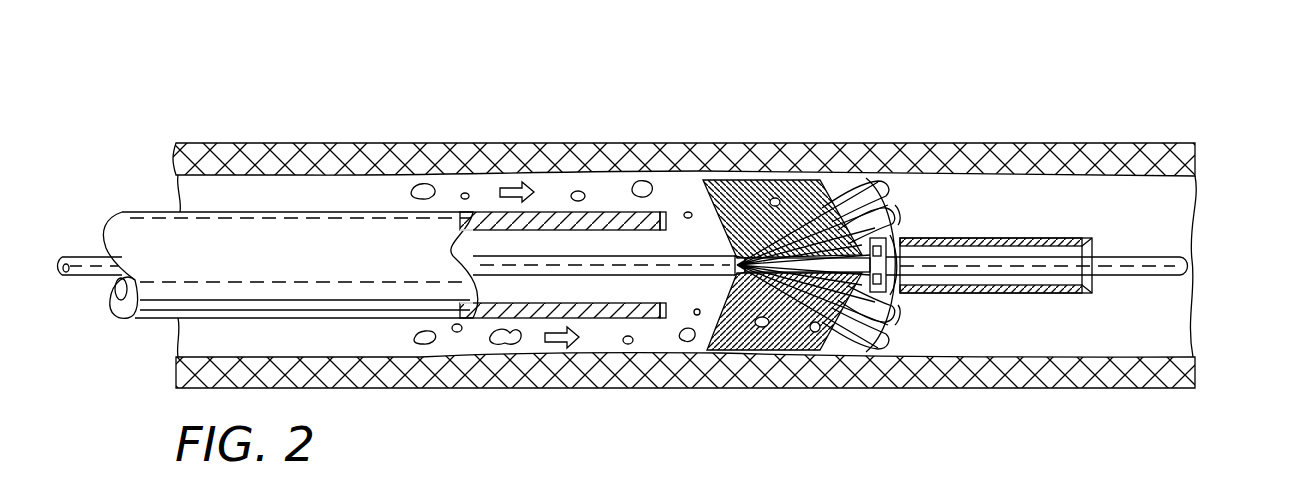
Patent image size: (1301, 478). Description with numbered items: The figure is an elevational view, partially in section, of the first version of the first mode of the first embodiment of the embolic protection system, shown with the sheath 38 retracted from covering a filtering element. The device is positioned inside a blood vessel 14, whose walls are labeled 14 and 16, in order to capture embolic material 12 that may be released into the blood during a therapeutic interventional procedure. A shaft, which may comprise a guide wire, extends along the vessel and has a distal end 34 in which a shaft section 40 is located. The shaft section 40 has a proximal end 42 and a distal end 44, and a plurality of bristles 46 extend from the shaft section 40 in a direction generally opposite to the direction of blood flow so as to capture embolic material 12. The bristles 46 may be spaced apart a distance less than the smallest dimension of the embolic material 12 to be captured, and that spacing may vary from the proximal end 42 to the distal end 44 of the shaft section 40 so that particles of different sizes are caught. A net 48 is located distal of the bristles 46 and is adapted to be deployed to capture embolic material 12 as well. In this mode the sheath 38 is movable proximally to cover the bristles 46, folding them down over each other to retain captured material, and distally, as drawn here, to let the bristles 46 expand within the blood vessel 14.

The embolic material 12 is at (587, 192).
The blood vessel 14 is at (331, 143).
The vessel wall 16 is at (1083, 158).
The distal end 34 is at (1172, 259).
The sheath 38 is at (1060, 238).
The shaft section 40 is at (817, 260).
The proximal end 42 is at (751, 257).
The distal end 44 is at (863, 258).
The bristles 46 is at (775, 198).
The net 48 is at (897, 228).